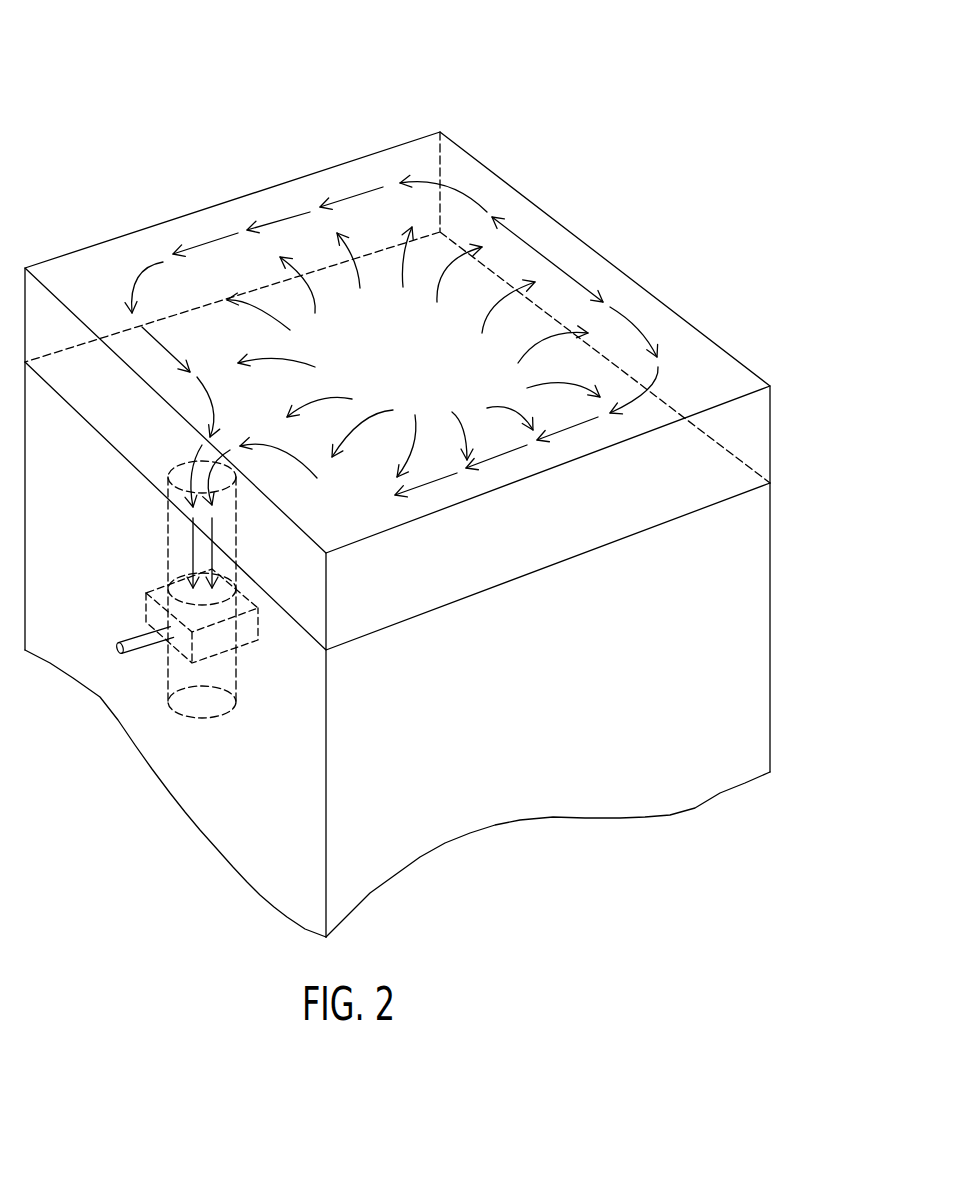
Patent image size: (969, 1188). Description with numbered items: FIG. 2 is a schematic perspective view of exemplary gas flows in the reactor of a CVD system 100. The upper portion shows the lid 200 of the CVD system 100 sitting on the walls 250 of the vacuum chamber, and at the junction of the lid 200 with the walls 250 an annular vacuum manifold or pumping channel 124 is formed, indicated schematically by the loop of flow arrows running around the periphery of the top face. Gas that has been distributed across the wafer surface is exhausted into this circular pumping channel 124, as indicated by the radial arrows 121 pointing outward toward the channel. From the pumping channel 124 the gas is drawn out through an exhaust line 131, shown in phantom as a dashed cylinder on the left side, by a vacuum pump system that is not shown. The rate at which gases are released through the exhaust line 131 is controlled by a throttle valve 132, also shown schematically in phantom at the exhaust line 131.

The CVD system 100 is at (538, 104).
The arrows 121 is at (532, 386).
The pumping channel 124 is at (530, 243).
The exhaust line 131 is at (165, 538).
The throttle valve 132 is at (147, 617).
The lid 200 is at (724, 350).
The walls 250 is at (767, 649).